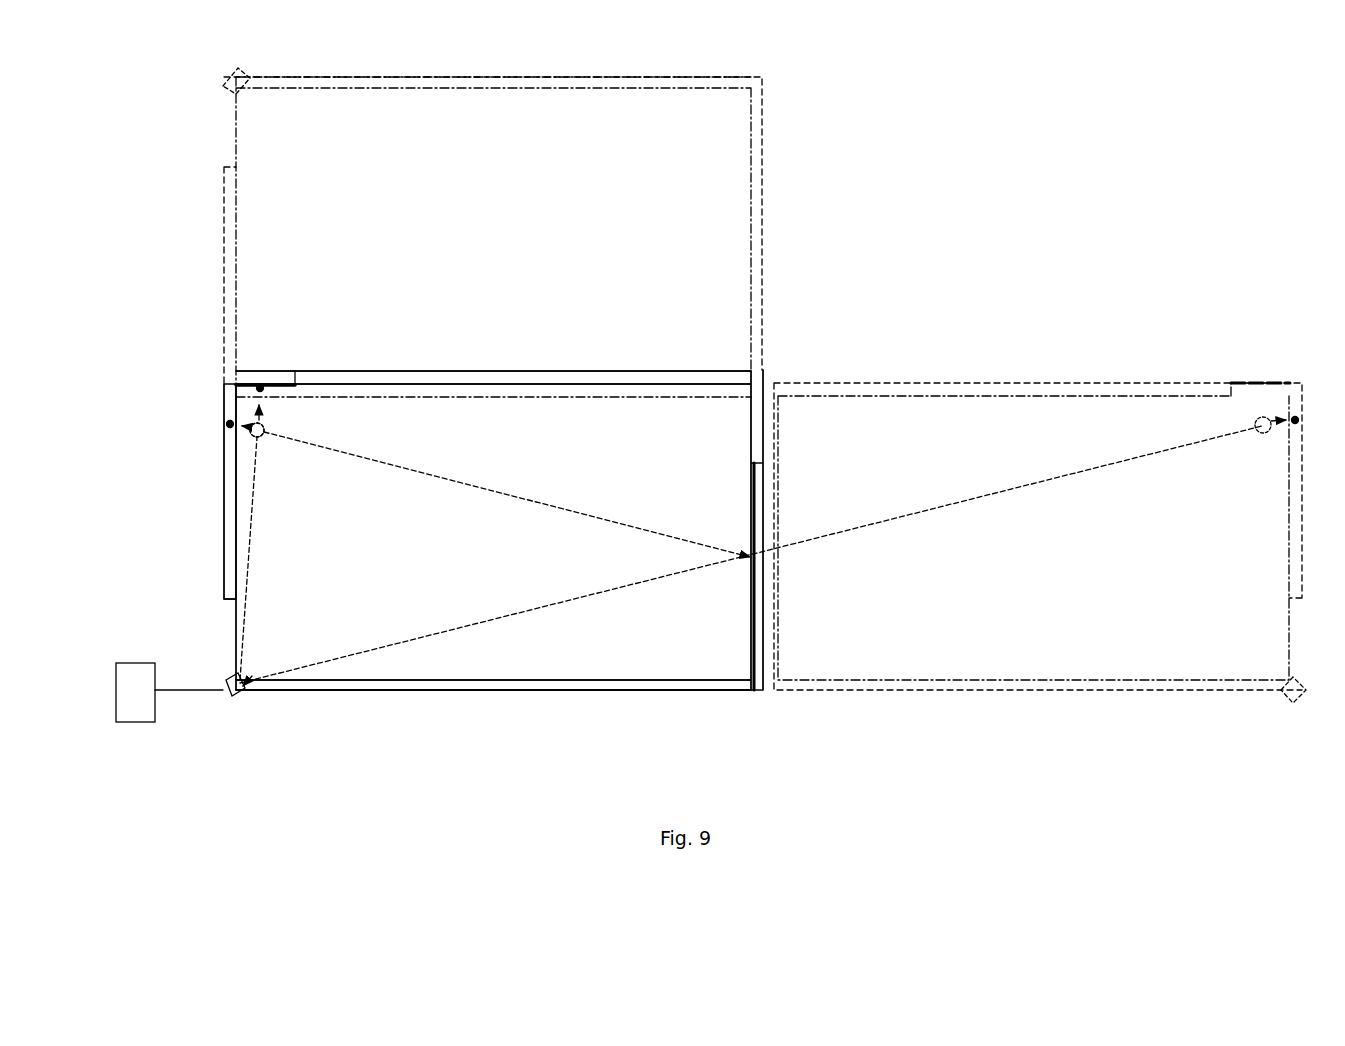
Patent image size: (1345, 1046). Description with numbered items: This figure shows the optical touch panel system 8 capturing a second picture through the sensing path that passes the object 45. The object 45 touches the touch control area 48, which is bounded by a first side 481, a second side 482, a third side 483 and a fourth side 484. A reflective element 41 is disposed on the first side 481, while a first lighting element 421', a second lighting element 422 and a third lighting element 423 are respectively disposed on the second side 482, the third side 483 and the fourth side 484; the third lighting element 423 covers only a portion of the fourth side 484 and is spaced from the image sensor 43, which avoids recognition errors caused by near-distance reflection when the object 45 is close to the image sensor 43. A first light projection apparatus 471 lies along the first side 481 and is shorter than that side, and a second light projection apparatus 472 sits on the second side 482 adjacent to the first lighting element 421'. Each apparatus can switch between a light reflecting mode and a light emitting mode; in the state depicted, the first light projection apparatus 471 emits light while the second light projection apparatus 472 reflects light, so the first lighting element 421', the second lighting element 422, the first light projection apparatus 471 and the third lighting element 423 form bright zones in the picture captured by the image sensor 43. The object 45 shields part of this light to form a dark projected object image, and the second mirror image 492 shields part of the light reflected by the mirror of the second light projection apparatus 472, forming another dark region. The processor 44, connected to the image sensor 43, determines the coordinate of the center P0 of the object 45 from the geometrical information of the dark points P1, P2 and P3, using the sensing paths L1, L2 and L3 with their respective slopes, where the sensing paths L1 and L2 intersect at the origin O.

The optical touch device 8 is at (772, 366).
The reflective element 41 is at (514, 378).
The touch control area 48 is at (492, 655).
The first side 481 is at (405, 385).
The second side 482 is at (752, 440).
The third side 483 is at (383, 680).
The fourth side 484 is at (234, 520).
The first light projection apparatus 471 is at (248, 378).
The second light projection apparatus 472 is at (753, 594).
The first lighting element 421' is at (554, 411).
The second lighting element 422 is at (633, 690).
The third lighting element 423 is at (226, 408).
The second mirror image 492 is at (1262, 420).
The processor 44 is at (138, 663).
The image sensor 43 is at (218, 705).
The object 45 is at (240, 440).
The origin O is at (260, 700).
The center of the object P0 is at (270, 447).
The dark point P1 is at (260, 384).
The dark point P2 is at (230, 424).
The dark point P3 is at (1295, 414).
The sensing path L1 is at (260, 558).
The sensing path L2 is at (751, 554).
The sensing path L3 is at (507, 494).